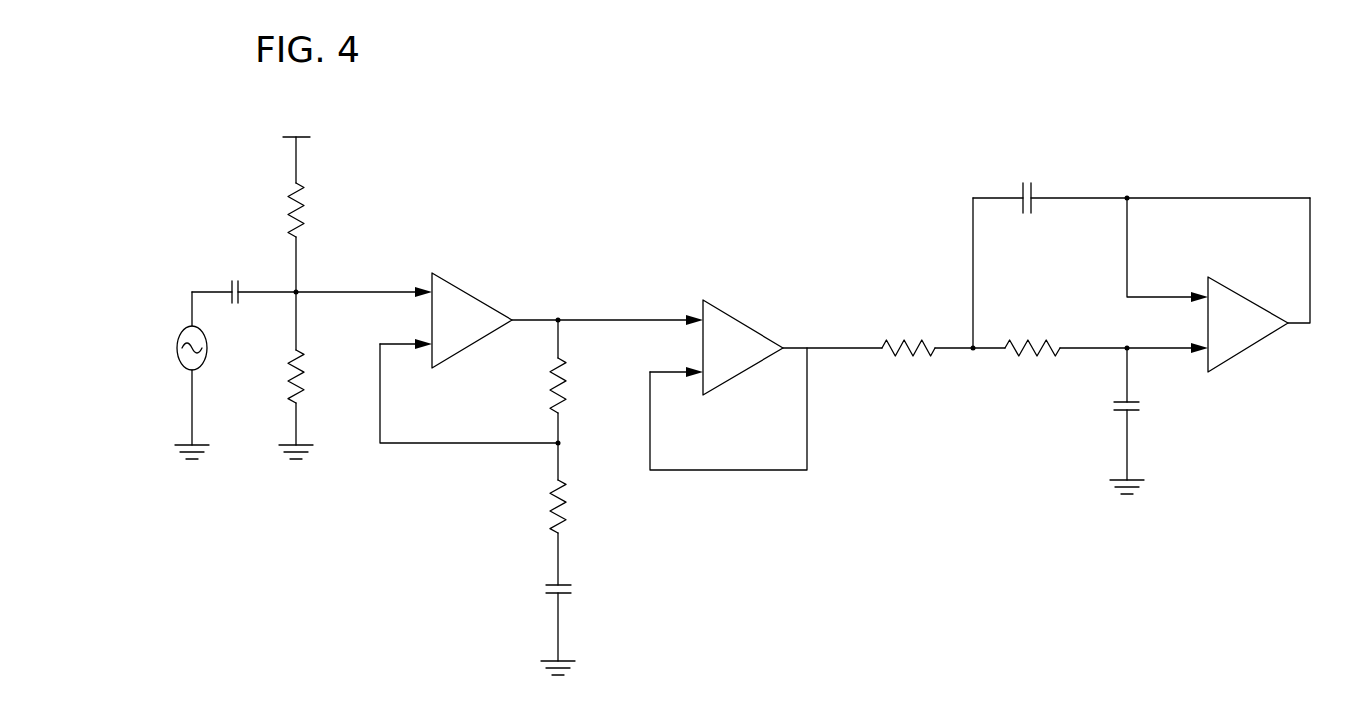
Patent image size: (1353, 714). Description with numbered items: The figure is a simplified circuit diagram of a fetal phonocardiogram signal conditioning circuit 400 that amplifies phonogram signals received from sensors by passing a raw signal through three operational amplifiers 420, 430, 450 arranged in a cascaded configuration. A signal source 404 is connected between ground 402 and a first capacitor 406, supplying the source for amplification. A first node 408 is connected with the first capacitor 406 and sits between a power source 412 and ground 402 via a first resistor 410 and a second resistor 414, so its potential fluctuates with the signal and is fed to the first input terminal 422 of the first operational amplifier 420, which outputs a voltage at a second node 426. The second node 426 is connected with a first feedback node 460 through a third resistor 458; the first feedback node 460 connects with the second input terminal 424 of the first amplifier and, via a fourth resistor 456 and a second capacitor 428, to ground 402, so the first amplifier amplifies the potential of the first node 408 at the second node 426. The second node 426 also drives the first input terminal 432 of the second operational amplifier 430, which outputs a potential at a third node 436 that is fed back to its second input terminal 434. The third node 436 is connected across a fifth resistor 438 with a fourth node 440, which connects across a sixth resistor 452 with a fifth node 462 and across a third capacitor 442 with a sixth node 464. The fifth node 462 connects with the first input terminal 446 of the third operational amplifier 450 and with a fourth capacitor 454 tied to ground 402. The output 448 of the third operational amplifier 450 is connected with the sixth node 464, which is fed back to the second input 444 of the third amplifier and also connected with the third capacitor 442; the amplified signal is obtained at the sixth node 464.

The signal conditioning circuit 400 is at (925, 130).
The ground 402 is at (188, 462).
The signal source 404 is at (208, 350).
The first capacitor 406 is at (224, 291).
The first node 408 is at (300, 291).
The first resistor 410 is at (292, 207).
The power source 412 is at (282, 125).
The second resistor 414 is at (289, 374).
The first operational amplifier 420 is at (470, 290).
The first input terminal of the first operational amplifier 422 is at (432, 274).
The second input terminal of the first operational amplifier 424 is at (432, 366).
The second node 426 is at (562, 318).
The second capacitor 428 is at (548, 592).
The second operational amplifier 430 is at (738, 318).
The first input terminal of the second operational amplifier 432 is at (703, 300).
The second input terminal of the second operational amplifier 434 is at (703, 394).
The third node 436 is at (793, 346).
The fifth resistor 438 is at (893, 358).
The fourth node 440 is at (970, 345).
The third capacitor 442 is at (1030, 212).
The second input of the third operational amplifier 444 is at (1207, 278).
The first input terminal of the third operational amplifier 446 is at (1208, 372).
The output of the third operational amplifier 448 is at (1290, 325).
The third operational amplifier 450 is at (1255, 362).
The sixth resistor 452 is at (1020, 358).
The fourth capacitor 454 is at (1112, 410).
The fourth resistor 456 is at (548, 500).
The third resistor 458 is at (567, 366).
The first feedback node 460 is at (556, 442).
The fifth node 462 is at (1130, 346).
The sixth node 464 is at (1130, 197).